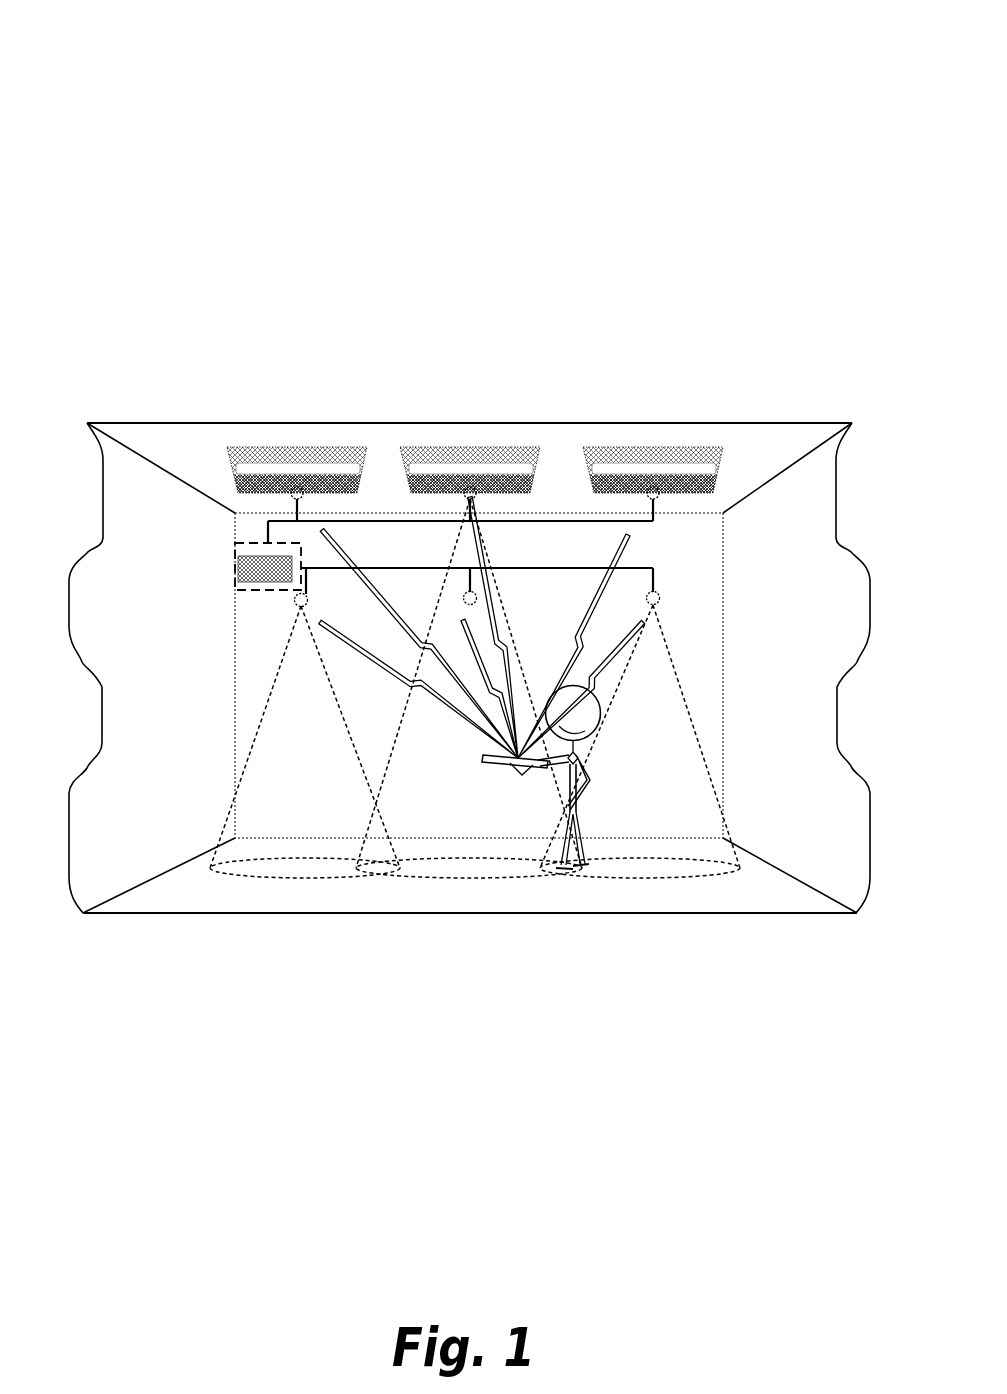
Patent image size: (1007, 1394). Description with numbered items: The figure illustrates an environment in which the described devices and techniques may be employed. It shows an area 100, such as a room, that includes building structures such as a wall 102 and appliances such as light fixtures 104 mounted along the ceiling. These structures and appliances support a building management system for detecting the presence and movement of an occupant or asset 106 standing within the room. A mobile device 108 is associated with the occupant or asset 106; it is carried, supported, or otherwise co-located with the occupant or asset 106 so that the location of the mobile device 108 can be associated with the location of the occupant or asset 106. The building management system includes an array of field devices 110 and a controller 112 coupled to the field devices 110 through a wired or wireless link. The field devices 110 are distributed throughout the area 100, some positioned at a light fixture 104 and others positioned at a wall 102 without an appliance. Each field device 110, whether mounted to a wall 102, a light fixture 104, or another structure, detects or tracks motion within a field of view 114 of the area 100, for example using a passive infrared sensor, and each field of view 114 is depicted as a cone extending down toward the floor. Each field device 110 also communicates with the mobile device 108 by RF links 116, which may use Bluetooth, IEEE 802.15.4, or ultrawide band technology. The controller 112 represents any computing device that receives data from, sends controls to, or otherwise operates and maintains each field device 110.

The area 100 is at (133, 62).
The wall 102 is at (396, 714).
The light fixture 104 is at (302, 445).
The occupant or asset 106 is at (598, 762).
The mobile device 108 is at (487, 768).
The field device 110 is at (294, 490).
The controller 112 is at (235, 568).
The field of view 114 is at (282, 740).
The RF link 116 is at (399, 662).